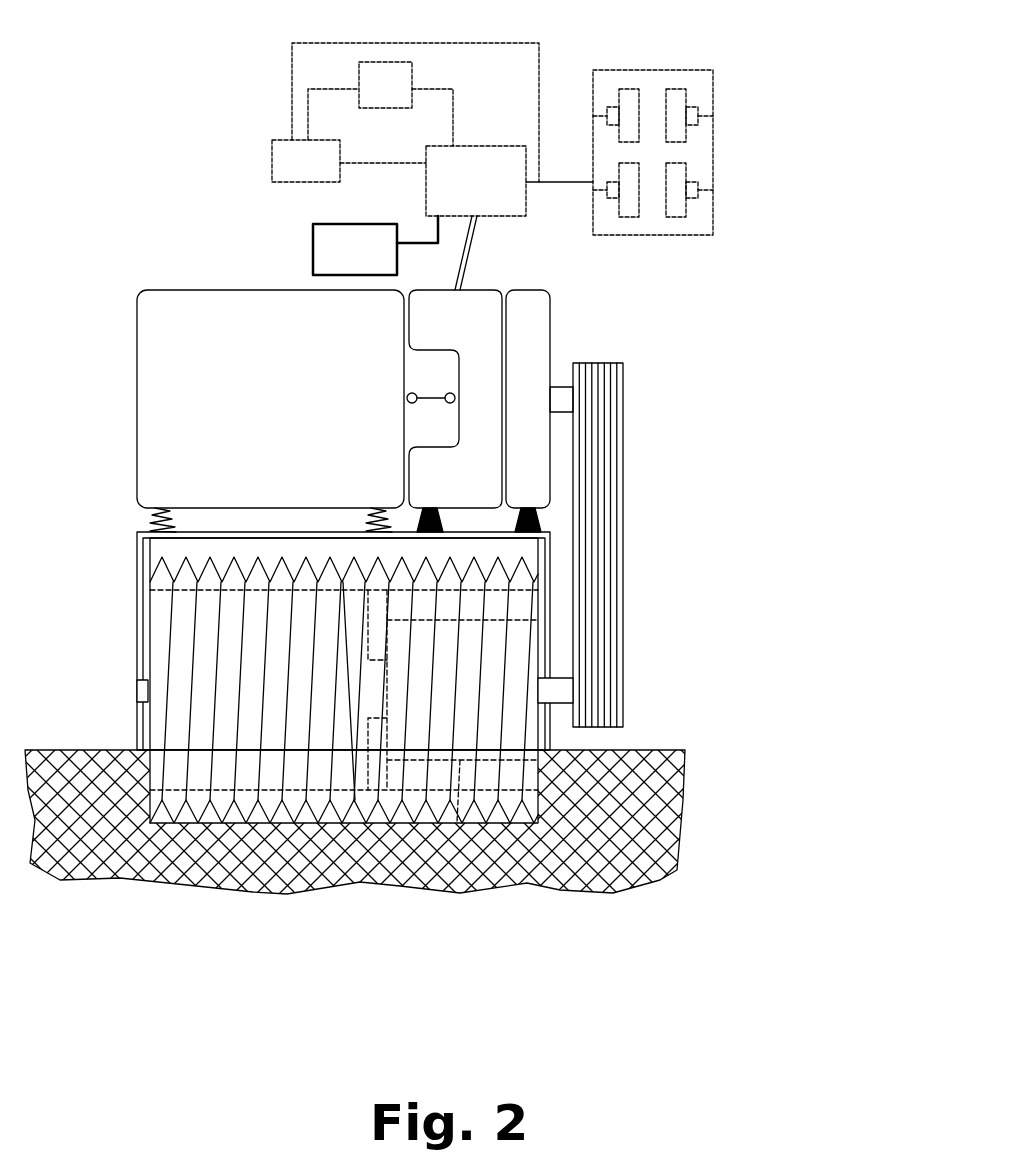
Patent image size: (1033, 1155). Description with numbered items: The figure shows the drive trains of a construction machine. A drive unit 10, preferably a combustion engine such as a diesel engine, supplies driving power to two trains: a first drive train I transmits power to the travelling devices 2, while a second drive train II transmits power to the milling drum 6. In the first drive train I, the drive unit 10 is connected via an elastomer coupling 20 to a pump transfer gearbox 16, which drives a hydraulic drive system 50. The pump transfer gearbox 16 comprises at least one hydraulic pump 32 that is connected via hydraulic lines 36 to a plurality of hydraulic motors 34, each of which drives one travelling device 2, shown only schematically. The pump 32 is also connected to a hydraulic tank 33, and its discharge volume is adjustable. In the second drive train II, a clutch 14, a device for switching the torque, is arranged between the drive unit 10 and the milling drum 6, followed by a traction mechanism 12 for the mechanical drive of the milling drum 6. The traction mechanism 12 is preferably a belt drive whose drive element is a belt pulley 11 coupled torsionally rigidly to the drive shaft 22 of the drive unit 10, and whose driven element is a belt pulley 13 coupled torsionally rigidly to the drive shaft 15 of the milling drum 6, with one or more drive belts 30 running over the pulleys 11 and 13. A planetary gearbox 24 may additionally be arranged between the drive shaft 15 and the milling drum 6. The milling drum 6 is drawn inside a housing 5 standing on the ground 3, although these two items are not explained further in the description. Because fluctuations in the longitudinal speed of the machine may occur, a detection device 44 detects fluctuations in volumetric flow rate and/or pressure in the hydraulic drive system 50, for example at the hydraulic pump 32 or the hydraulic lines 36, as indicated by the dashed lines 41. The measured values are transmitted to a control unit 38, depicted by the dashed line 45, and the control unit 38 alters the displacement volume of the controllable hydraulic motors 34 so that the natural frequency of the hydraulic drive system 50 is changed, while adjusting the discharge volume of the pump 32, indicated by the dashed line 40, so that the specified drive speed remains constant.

The travelling devices 2 is at (676, 95).
The ground 3 is at (662, 750).
The housing frame 5 is at (142, 572).
The milling drum 6 is at (158, 608).
The drive unit 10 is at (246, 409).
The drive element 11 is at (648, 390).
The traction mechanism 12 is at (646, 564).
The driven element 13 is at (655, 672).
The clutch 14 is at (514, 399).
The drive shaft 15 is at (558, 688).
The pump transfer gearbox 16 is at (467, 399).
The elastomer coupling 20 is at (412, 403).
The drive shaft 22 is at (562, 397).
The planetary gearbox 24 is at (507, 868).
The drive belts 30 is at (605, 480).
The hydraulic pump 32 is at (478, 157).
The hydraulic tank 33 is at (325, 245).
The hydraulic motors 34 is at (612, 190).
The hydraulic lines 36 is at (610, 70).
The control unit 38 is at (385, 68).
The dashed line 40 is at (440, 90).
The dashed lines 41 is at (474, 42).
The detection device 44 is at (280, 162).
The dashed line 45 is at (318, 96).
The hydraulic drive system 50 is at (747, 67).
The first drive train I is at (871, 197).
The second drive train II is at (871, 346).